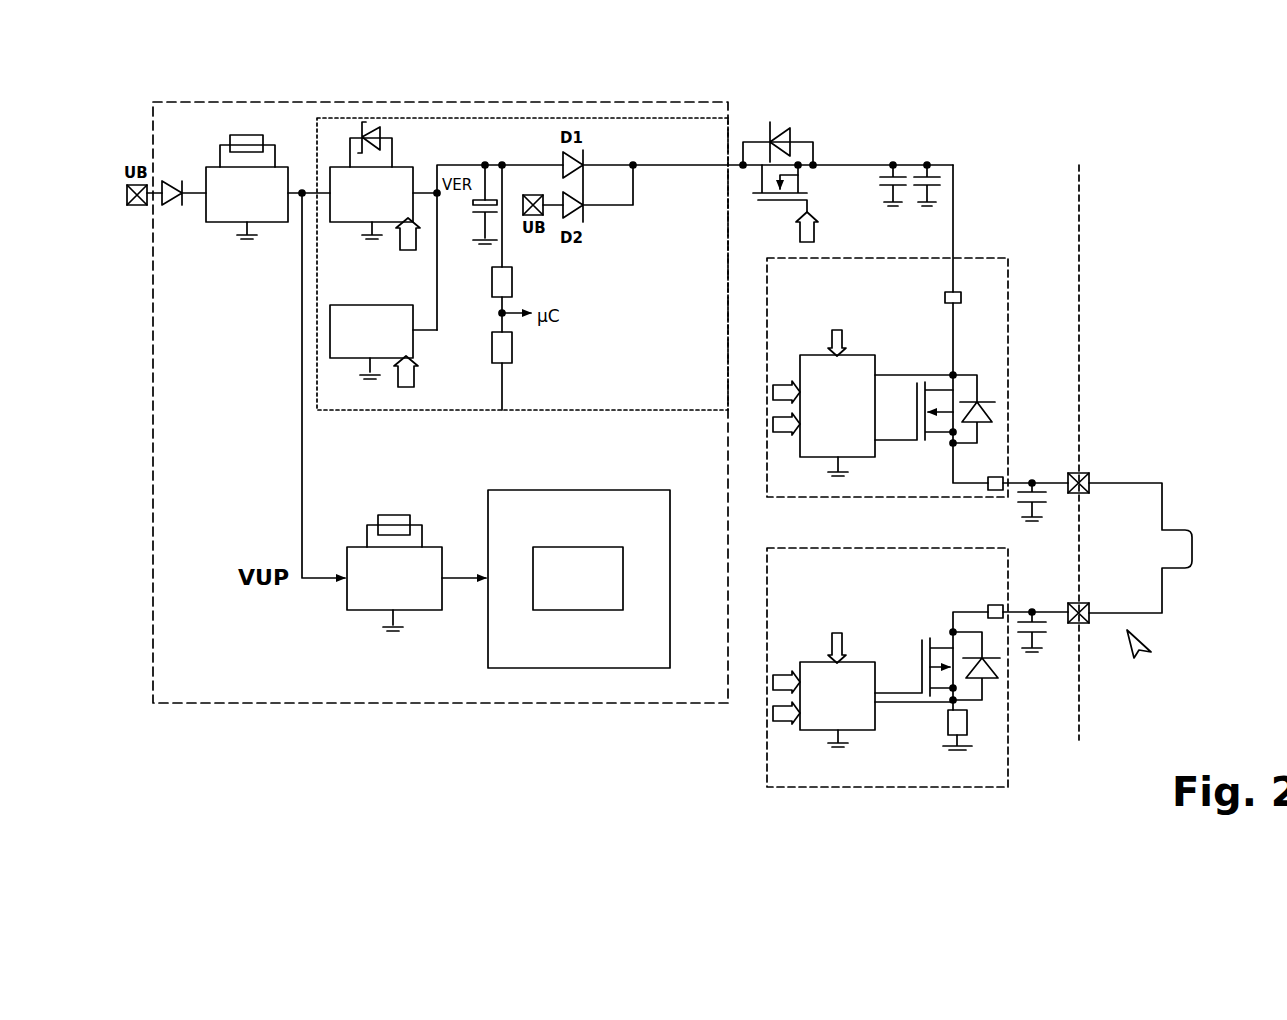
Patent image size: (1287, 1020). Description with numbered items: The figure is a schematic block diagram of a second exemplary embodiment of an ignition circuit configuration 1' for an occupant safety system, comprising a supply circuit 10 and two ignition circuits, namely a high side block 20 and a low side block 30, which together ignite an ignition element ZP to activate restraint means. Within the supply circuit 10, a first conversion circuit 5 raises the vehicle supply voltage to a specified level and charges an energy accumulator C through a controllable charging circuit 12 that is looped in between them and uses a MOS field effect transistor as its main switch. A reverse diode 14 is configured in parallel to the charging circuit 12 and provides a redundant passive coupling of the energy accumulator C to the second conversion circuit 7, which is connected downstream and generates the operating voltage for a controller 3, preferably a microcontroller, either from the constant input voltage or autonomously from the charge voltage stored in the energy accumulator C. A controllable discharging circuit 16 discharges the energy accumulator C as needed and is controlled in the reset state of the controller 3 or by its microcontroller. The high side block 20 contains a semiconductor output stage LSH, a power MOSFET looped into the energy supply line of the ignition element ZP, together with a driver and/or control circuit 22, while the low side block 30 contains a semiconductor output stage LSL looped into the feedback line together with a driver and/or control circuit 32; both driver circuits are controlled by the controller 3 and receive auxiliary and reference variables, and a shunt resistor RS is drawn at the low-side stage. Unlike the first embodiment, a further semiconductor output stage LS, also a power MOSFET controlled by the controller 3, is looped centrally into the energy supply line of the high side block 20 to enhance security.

The ignition circuit configuration 1' is at (954, 65).
The controller 3 is at (580, 500).
The first conversion circuit 5 is at (218, 183).
The second conversion circuit 7 is at (355, 598).
The supply circuit 10 is at (452, 100).
The controllable charging circuit 12 is at (355, 162).
The reverse diode 14 is at (370, 121).
The controllable discharging circuit 16 is at (357, 352).
The high side block 20 is at (987, 224).
The driver and/or control circuit 22 is at (800, 452).
The low side block 30 is at (745, 695).
The driver and/or control circuit 32 is at (823, 724).
The energy accumulator C is at (488, 198).
The further semiconductor output stage LS is at (812, 122).
The high-side semiconductor output stage LSH is at (913, 395).
The low-side semiconductor output stage LSL is at (941, 695).
The shunt resistor RS is at (947, 728).
The ignition element ZP is at (1140, 570).